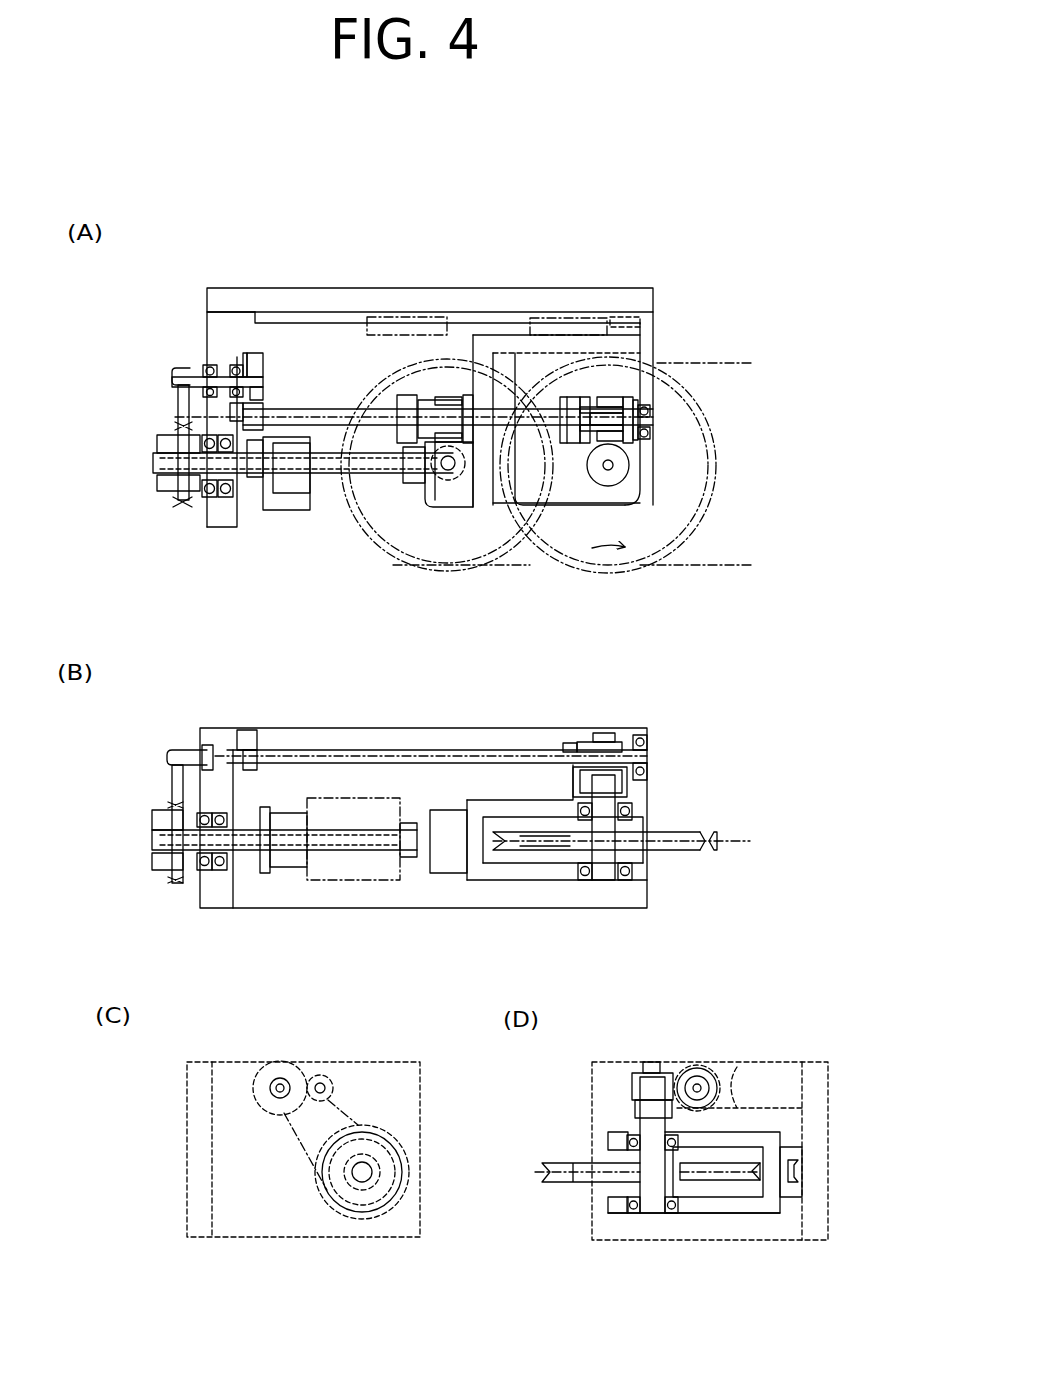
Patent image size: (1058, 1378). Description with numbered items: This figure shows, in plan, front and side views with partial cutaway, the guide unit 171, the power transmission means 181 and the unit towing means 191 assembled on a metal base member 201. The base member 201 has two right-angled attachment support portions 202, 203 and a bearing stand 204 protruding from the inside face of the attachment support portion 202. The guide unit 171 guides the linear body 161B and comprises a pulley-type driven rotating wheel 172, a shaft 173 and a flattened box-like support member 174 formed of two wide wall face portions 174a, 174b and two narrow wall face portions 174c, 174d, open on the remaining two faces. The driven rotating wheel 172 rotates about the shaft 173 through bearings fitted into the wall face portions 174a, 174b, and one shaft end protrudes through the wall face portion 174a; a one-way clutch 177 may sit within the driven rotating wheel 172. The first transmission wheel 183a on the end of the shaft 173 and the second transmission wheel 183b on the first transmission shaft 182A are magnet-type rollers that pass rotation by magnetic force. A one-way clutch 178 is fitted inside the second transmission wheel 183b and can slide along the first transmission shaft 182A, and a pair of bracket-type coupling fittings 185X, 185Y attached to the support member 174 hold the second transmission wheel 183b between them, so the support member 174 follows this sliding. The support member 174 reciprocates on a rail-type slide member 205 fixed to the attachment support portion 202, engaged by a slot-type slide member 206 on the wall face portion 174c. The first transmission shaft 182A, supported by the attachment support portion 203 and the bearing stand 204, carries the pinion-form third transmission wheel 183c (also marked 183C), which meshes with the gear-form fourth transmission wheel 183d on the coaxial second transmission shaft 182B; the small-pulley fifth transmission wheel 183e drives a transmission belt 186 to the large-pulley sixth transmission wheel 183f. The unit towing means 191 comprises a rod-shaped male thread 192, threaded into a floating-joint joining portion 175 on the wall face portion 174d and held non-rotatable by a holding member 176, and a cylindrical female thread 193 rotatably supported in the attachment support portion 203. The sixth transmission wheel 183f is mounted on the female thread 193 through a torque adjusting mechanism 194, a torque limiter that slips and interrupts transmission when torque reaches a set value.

The linear body 161B is at (750, 367).
The guide unit 171 is at (483, 330).
The driven rotating wheel 172 is at (687, 467).
The shaft 173 is at (622, 473).
The support member 174 is at (512, 343).
The wide wall face portion 174a is at (632, 497).
The wide wall face portion 174b is at (513, 872).
The narrow wall face portion 174c is at (613, 343).
The narrow wall face portion 174d is at (483, 493).
The joining portion 175 is at (413, 487).
The holding member 176 is at (433, 507).
The one-way clutch 177 is at (657, 1097).
The one-way clutch 178 is at (600, 445).
The power transmission means 181 is at (247, 343).
The first transmission shaft 182A is at (290, 409).
The second transmission shaft 182B is at (198, 383).
The first transmission wheel 183a is at (614, 463).
The second transmission wheel 183b is at (612, 397).
The third transmission wheel 183c is at (255, 432).
The third transmission wheel 183C is at (250, 740).
The fourth transmission wheel 183d is at (240, 357).
The fifth transmission wheel 183e is at (175, 373).
The sixth transmission wheel 183f is at (177, 500).
The bracket-type coupling fitting 185X is at (590, 440).
The bracket-type coupling fitting 185Y is at (643, 405).
The transmission belt 186 is at (178, 402).
The unit towing means 191 is at (150, 448).
The male thread 192 is at (293, 463).
The female thread 193 is at (157, 473).
The torque adjusting mechanism 194 is at (173, 493).
The base member 201 is at (200, 283).
The attachment support portion 202 is at (420, 302).
The attachment support portion 203 is at (217, 515).
The bearing stand 204 is at (647, 327).
The slide member 205 is at (337, 320).
The slide member 206 is at (580, 327).